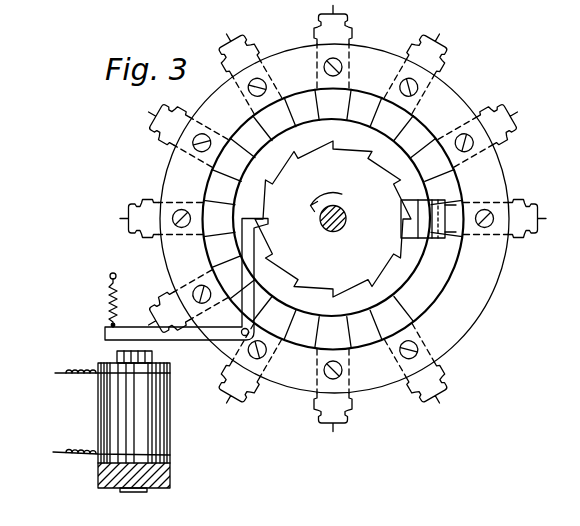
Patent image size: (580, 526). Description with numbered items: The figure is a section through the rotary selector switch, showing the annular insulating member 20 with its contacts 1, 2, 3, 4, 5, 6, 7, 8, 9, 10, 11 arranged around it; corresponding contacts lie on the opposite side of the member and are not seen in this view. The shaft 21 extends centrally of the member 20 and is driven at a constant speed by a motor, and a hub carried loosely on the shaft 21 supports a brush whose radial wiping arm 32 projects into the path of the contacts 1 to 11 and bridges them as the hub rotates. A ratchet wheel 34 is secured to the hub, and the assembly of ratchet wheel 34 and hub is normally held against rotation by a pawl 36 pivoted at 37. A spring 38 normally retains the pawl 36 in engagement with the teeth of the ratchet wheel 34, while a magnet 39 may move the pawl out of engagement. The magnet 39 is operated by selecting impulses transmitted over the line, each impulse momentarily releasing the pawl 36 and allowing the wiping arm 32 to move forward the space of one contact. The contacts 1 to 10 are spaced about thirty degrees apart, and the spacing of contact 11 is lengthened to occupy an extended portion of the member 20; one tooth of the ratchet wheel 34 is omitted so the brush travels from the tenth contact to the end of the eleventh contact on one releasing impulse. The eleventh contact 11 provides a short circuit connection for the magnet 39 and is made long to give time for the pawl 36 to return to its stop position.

The contact 1 is at (512, 115).
The contact 2 is at (442, 41).
The contact 3 is at (341, 11).
The contact 4 is at (244, 35).
The contact 5 is at (148, 118).
The contact 6 is at (166, 219).
The contact 7 is at (160, 301).
The contact 8 is at (233, 393).
The contact 9 is at (333, 423).
The contact 10 is at (438, 396).
The contact 11 is at (499, 219).
The annular insulating member 20 is at (452, 196).
The shaft 21 is at (331, 232).
The wiping arm 32 is at (426, 241).
The ratchet wheel 34 is at (315, 155).
The pawl 36 is at (254, 297).
The pivot 37 is at (241, 335).
The spring 38 is at (97, 300).
The magnet 39 is at (160, 438).